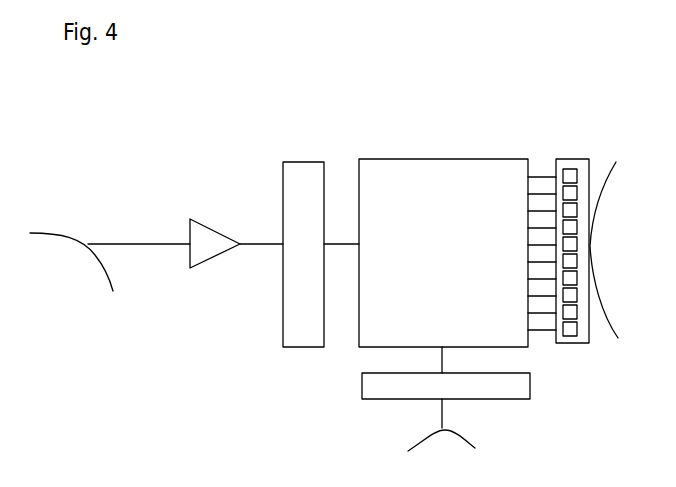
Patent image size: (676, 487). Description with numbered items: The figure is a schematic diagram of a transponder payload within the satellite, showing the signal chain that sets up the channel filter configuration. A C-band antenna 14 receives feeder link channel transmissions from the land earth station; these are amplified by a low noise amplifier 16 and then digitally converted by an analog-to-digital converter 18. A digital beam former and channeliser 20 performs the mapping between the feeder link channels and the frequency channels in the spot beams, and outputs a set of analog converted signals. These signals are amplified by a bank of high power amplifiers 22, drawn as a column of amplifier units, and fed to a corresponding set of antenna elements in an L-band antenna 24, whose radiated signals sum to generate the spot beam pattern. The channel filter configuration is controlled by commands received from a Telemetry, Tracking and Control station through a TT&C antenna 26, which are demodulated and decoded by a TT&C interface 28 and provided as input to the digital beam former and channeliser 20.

The C-band antenna 14 is at (70, 148).
The low noise amplifier 16 is at (206, 148).
The analog-to-digital converter 18 is at (300, 148).
The digital beam former and channeliser 20 is at (433, 148).
The bank of high power amplifiers 22 is at (571, 148).
The lens 24 is at (613, 148).
The TT&C antenna 26 is at (536, 439).
The TT&C interface 28 is at (536, 384).